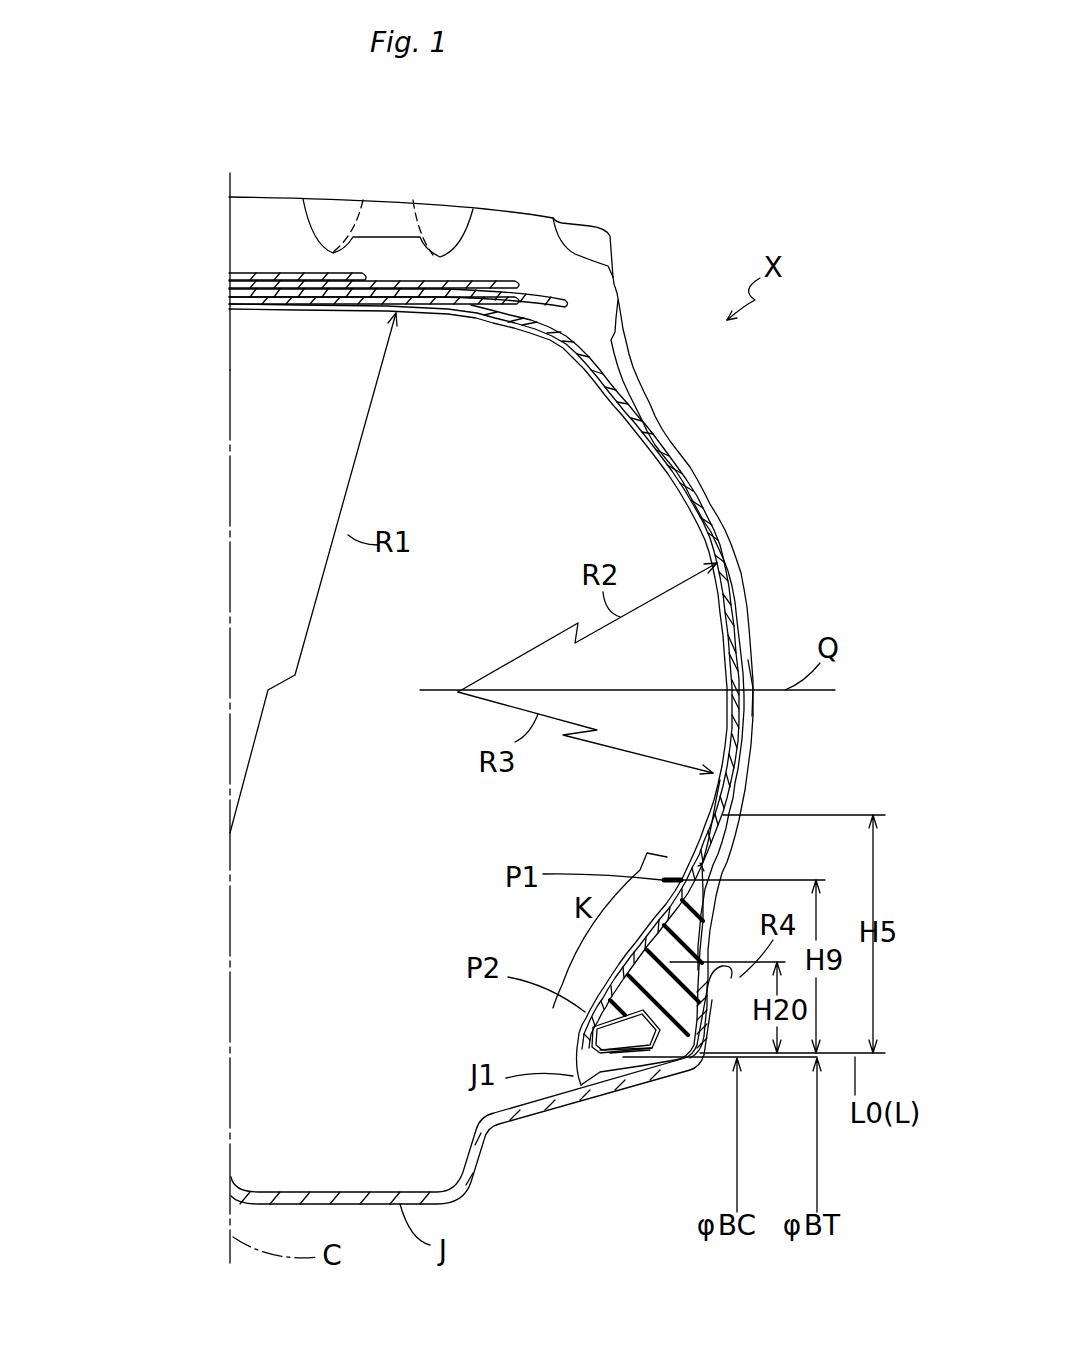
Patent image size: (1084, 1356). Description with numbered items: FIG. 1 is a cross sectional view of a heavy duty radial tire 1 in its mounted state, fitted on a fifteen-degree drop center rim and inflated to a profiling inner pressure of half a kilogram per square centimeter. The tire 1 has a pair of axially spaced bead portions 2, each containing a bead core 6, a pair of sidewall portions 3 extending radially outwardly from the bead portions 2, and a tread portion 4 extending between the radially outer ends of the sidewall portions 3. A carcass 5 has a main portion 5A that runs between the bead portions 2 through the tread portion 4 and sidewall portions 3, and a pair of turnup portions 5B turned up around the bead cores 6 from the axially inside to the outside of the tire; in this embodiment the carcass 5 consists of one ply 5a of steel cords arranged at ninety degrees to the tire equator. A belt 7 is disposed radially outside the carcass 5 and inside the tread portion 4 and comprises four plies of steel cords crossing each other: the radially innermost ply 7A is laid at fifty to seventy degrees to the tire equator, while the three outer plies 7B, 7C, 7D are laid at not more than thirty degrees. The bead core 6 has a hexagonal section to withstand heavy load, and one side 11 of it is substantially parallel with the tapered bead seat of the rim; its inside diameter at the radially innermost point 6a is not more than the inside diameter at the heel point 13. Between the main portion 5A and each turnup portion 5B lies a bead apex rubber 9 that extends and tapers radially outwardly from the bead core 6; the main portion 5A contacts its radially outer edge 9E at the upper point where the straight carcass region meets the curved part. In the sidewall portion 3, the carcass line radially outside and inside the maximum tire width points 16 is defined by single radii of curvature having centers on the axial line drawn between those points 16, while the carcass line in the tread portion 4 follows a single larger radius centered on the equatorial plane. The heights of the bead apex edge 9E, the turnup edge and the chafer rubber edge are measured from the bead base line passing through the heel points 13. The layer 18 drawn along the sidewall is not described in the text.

The heavy duty radial tire 1 is at (712, 230).
The bead portion 2 is at (548, 1031).
The sidewall portion 3 is at (737, 492).
The tread portion 4 is at (403, 187).
The carcass 5 is at (575, 796).
The main portion 5A is at (707, 793).
The turnup portion 5B is at (697, 855).
The ply 5a is at (663, 467).
The bead core 6 is at (573, 1052).
The radially innermost point 6a is at (610, 1067).
The belt 7 is at (103, 218).
The radially innermost ply 7A is at (229, 298).
The outer ply 7B is at (229, 291).
The outer ply 7C is at (229, 284).
The outer ply 7D is at (229, 274).
The bead apex rubber 9 is at (700, 920).
The radially outer edge 9E is at (698, 868).
The side 11 is at (630, 1058).
The heel point 13 is at (703, 1037).
The maximum tire width point 16 is at (760, 672).
The sidewall reinforcing layer 18 is at (632, 352).